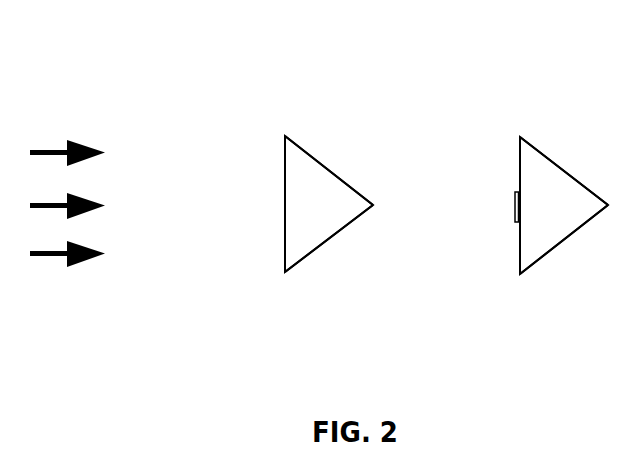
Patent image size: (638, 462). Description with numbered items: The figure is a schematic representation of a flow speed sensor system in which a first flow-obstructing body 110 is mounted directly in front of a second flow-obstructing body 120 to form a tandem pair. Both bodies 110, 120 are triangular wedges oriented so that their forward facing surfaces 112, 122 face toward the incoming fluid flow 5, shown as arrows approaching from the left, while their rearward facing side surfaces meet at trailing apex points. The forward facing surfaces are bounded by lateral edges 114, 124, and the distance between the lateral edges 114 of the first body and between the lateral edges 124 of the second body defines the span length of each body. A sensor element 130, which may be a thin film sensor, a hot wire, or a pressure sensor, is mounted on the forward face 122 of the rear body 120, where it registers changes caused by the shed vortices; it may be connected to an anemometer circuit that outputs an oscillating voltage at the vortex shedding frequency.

The incoming fluid flow 5 is at (43, 150).
The first flow-obstructing body 110 is at (340, 177).
The forward facing surface of first body 112 is at (285, 246).
The lateral edges of first body 114 is at (296, 126).
The second flow-obstructing body 120 is at (577, 178).
The forward facing surface of second body 122 is at (520, 248).
The lateral edges of second body 124 is at (531, 128).
The sensor element 130 is at (512, 202).